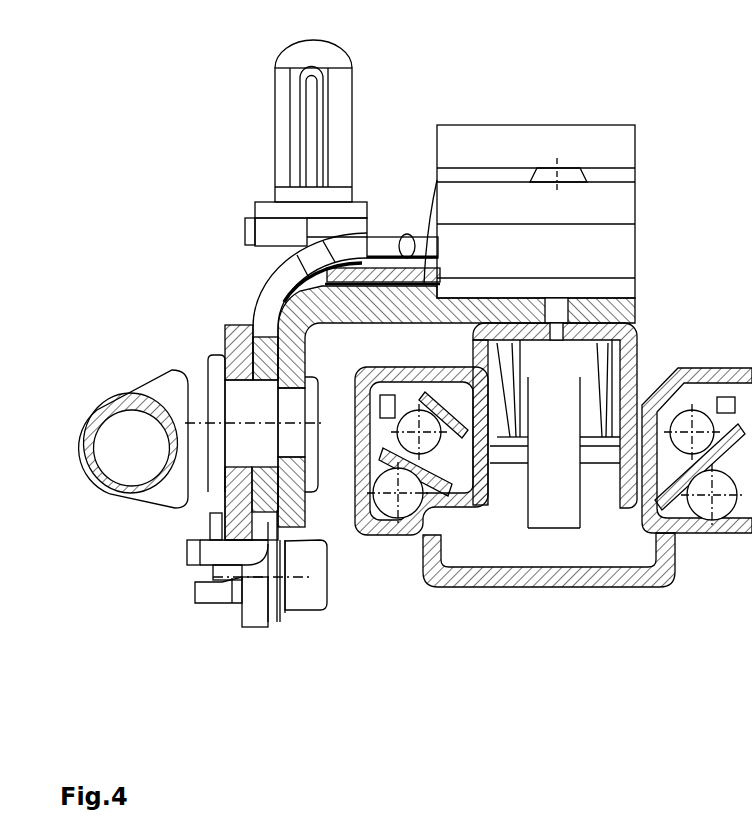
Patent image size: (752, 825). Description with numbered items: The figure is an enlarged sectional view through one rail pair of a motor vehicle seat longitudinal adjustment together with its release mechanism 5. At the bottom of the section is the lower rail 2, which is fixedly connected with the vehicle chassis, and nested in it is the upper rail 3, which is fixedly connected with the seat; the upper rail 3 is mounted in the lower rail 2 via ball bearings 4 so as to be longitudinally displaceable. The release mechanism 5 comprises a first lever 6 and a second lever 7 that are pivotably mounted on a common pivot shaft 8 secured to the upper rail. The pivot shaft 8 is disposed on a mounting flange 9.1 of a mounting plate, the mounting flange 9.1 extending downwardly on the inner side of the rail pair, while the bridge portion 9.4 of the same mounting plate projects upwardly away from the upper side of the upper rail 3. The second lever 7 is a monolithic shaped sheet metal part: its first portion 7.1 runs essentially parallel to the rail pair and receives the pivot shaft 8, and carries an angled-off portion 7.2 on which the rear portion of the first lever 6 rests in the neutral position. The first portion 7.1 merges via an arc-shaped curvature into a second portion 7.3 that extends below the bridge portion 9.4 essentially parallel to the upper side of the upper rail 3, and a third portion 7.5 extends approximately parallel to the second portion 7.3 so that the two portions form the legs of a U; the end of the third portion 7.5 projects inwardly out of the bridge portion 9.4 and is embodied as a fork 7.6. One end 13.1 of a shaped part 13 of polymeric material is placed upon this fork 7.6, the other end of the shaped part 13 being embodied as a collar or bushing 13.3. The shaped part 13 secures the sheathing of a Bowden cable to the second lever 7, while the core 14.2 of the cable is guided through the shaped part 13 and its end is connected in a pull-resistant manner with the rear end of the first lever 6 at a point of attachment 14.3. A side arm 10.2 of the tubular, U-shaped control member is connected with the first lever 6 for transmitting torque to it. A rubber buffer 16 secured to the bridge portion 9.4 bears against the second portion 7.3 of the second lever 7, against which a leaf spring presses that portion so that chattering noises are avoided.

The lower rail 2 is at (630, 587).
The upper rail 3 is at (640, 347).
The ball bearings 4 is at (418, 420).
The release mechanism 5 is at (661, 58).
The first lever 6 is at (233, 330).
The second lever 7 is at (253, 298).
The first portion 7.1 is at (225, 322).
The angled-off portion 7.2 is at (190, 552).
The second portion 7.3 is at (433, 182).
The third portion 7.5 is at (405, 238).
The fork 7.6 is at (256, 226).
The pivot shaft 8 is at (240, 425).
The mounting flange 9.1 is at (304, 500).
The bridge portion 9.4 is at (562, 126).
The side arms 10.2 is at (97, 413).
The shaped part 13 is at (278, 73).
The one end 13.1 is at (260, 210).
The collar or bushing 13.3 is at (343, 50).
The core 14.2 is at (318, 117).
The point of attachment 14.3 is at (285, 582).
The rubber buffer 16 is at (548, 170).